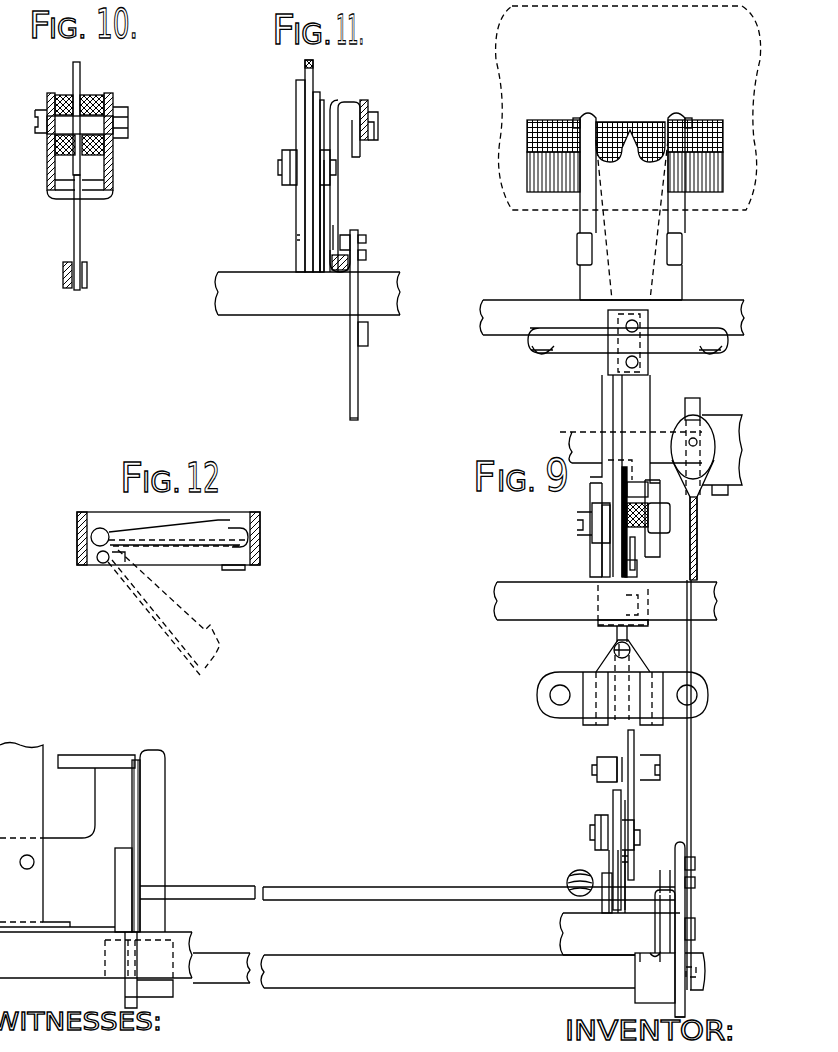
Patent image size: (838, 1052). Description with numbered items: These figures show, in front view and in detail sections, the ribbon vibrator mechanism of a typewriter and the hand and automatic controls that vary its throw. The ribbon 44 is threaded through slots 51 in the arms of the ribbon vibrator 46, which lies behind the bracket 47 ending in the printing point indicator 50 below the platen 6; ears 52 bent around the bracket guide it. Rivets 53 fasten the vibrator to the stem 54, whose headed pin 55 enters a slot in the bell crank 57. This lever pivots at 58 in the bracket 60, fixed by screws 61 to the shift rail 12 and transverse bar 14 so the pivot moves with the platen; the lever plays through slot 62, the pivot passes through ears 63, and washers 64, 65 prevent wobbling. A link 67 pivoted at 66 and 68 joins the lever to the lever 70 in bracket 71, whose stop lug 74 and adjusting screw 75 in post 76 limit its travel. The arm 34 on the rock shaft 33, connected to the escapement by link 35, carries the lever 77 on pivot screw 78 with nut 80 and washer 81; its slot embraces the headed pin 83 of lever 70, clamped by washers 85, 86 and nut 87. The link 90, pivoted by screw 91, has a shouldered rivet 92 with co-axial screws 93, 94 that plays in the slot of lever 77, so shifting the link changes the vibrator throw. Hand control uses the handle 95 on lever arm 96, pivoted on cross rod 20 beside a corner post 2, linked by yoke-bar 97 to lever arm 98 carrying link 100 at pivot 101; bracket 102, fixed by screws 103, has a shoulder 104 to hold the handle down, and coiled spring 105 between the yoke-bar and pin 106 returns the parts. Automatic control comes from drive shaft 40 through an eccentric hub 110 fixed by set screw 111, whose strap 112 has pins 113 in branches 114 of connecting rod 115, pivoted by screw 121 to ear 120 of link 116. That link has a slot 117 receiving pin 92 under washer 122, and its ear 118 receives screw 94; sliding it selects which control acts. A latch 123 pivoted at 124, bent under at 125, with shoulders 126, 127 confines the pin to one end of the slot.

In FIG. 9, the corner posts 2 is at (48, 791).
In FIG. 9, the platen 6 is at (497, 62).
In FIG. 9, the shift rail 12 is at (483, 322).
In FIG. 9, the transverse bar 14 is at (497, 597).
In FIG. 9, the cross rod 20 is at (360, 955).
In FIG. 11, the transverse rock shaft 33 is at (256, 305).
In FIG. 9, the transverse rock shaft 33 is at (563, 934).
In FIG. 11, the arm 34 is at (297, 215).
In FIG. 9, the arm 34 is at (609, 849).
In FIG. 11, the link 35 is at (313, 78).
In FIG. 9, the transverse driving shaft 40 is at (578, 434).
In FIG. 9, the ribbon 44 is at (538, 122).
In FIG. 9, the ribbon vibrator 46 is at (588, 112).
In FIG. 9, the bracket 47 is at (580, 286).
In FIG. 9, the printing point indicator 50 is at (630, 132).
In FIG. 9, the slot 51 is at (578, 118).
In FIG. 9, the ears 52 is at (592, 250).
In FIG. 9, the rivets 53 is at (630, 338).
In FIG. 10, the stem 54 is at (63, 283).
In FIG. 9, the stem 54 is at (621, 404).
In FIG. 10, the headed pin 55 is at (87, 271).
In FIG. 9, the headed pin 55 is at (636, 554).
In FIG. 9, the bell crank 57 is at (641, 493).
In FIG. 10, the pivot 58 is at (38, 135).
In FIG. 9, the pivot 58 is at (603, 537).
In FIG. 10, the bracket 60 is at (59, 199).
In FIG. 9, the bracket 60 is at (602, 396).
In FIG. 9, the screws 61 is at (546, 358).
In FIG. 10, the slot 62 is at (82, 203).
In FIG. 9, the slot 62 is at (628, 468).
In FIG. 10, the ears 63 is at (48, 182).
In FIG. 9, the ears 63 is at (590, 490).
In FIG. 10, the washer 64 is at (90, 97).
In FIG. 9, the washer 64 is at (648, 518).
In FIG. 10, the washer 65 is at (66, 97).
In FIG. 9, the washer 65 is at (602, 564).
In FIG. 9, the pivot 66 is at (636, 609).
In FIG. 9, the link 67 is at (612, 595).
In FIG. 9, the pivot 68 is at (638, 572).
In FIG. 9, the lever 70 is at (617, 633).
In FIG. 9, the bracket 71 is at (540, 713).
In FIG. 9, the stop lug 74 is at (620, 713).
In FIG. 9, the adjusting screw 75 is at (606, 651).
In FIG. 9, the post 76 is at (630, 647).
In FIG. 11, the lever 77 is at (318, 200).
In FIG. 9, the lever 77 is at (622, 807).
In FIG. 11, the pivot screw 78 is at (280, 160).
In FIG. 9, the pivot screw 78 is at (604, 825).
In FIG. 11, the nut 80 is at (288, 150).
In FIG. 9, the nut 80 is at (604, 816).
In FIG. 11, the washer 81 is at (300, 186).
In FIG. 9, the washer 81 is at (628, 819).
In FIG. 9, the headed pin 83 is at (663, 762).
In FIG. 9, the washer 85 is at (634, 757).
In FIG. 9, the washer 86 is at (608, 758).
In FIG. 9, the nut 87 is at (598, 785).
In FIG. 11, the link 90 is at (300, 236).
In FIG. 9, the link 90 is at (630, 857).
In FIG. 11, the pivot screw 91 is at (300, 105).
In FIG. 11, the shouldered rivet 92 is at (335, 225).
In FIG. 9, the shouldered rivet 92 is at (652, 894).
In FIG. 11, the screw 93 is at (343, 232).
In FIG. 11, the screw 94 is at (366, 256).
In FIG. 9, the screw 94 is at (695, 863).
In FIG. 9, the handle 95 is at (68, 755).
In FIG. 9, the lever arm 96 is at (122, 881).
In FIG. 9, the yoke-bar 97 is at (334, 886).
In FIG. 11, the lever arm 98 is at (358, 394).
In FIG. 9, the lever arm 98 is at (685, 1004).
In FIG. 11, the link 100 is at (358, 305).
In FIG. 9, the link 100 is at (685, 902).
In FIG. 11, the pivot 101 is at (368, 342).
In FIG. 9, the pivot 101 is at (696, 961).
In FIG. 9, the bracket 102 is at (160, 837).
In FIG. 9, the screws 103 is at (24, 868).
In FIG. 9, the shoulder 104 is at (132, 843).
In FIG. 9, the coiled spring 105 is at (567, 883).
In FIG. 9, the pin 106 is at (597, 909).
In FIG. 9, the hub 110 is at (742, 463).
In FIG. 9, the set screw 111 is at (722, 495).
In FIG. 9, the strap 112 is at (695, 411).
In FIG. 9, the pins 113 is at (697, 441).
In FIG. 9, the branches 114 is at (712, 451).
In FIG. 11, the connecting rod 115 is at (372, 100).
In FIG. 9, the connecting rod 115 is at (692, 657).
In FIG. 11, the link 116 is at (333, 103).
In FIG. 12, the link 116 is at (178, 521).
In FIG. 12, the slot 117 is at (100, 530).
In FIG. 11, the ear 118 is at (360, 234).
In FIG. 9, the ear 118 is at (695, 881).
In FIG. 11, the ear 120 is at (356, 150).
In FIG. 9, the ear 120 is at (668, 887).
In FIG. 11, the pivot screw 121 is at (378, 120).
In FIG. 9, the pivot screw 121 is at (695, 927).
In FIG. 11, the washer 122 is at (342, 276).
In FIG. 11, the latch 123 is at (345, 110).
In FIG. 12, the latch 123 is at (142, 606).
In FIG. 9, the latch 123 is at (656, 921).
In FIG. 12, the pivot 124 is at (100, 563).
In FIG. 11, the bent end 125 is at (330, 143).
In FIG. 12, the bent end 125 is at (236, 570).
In FIG. 9, the bent end 125 is at (650, 960).
In FIG. 12, the shoulder 126 is at (120, 558).
In FIG. 12, the shoulder 127 is at (236, 528).